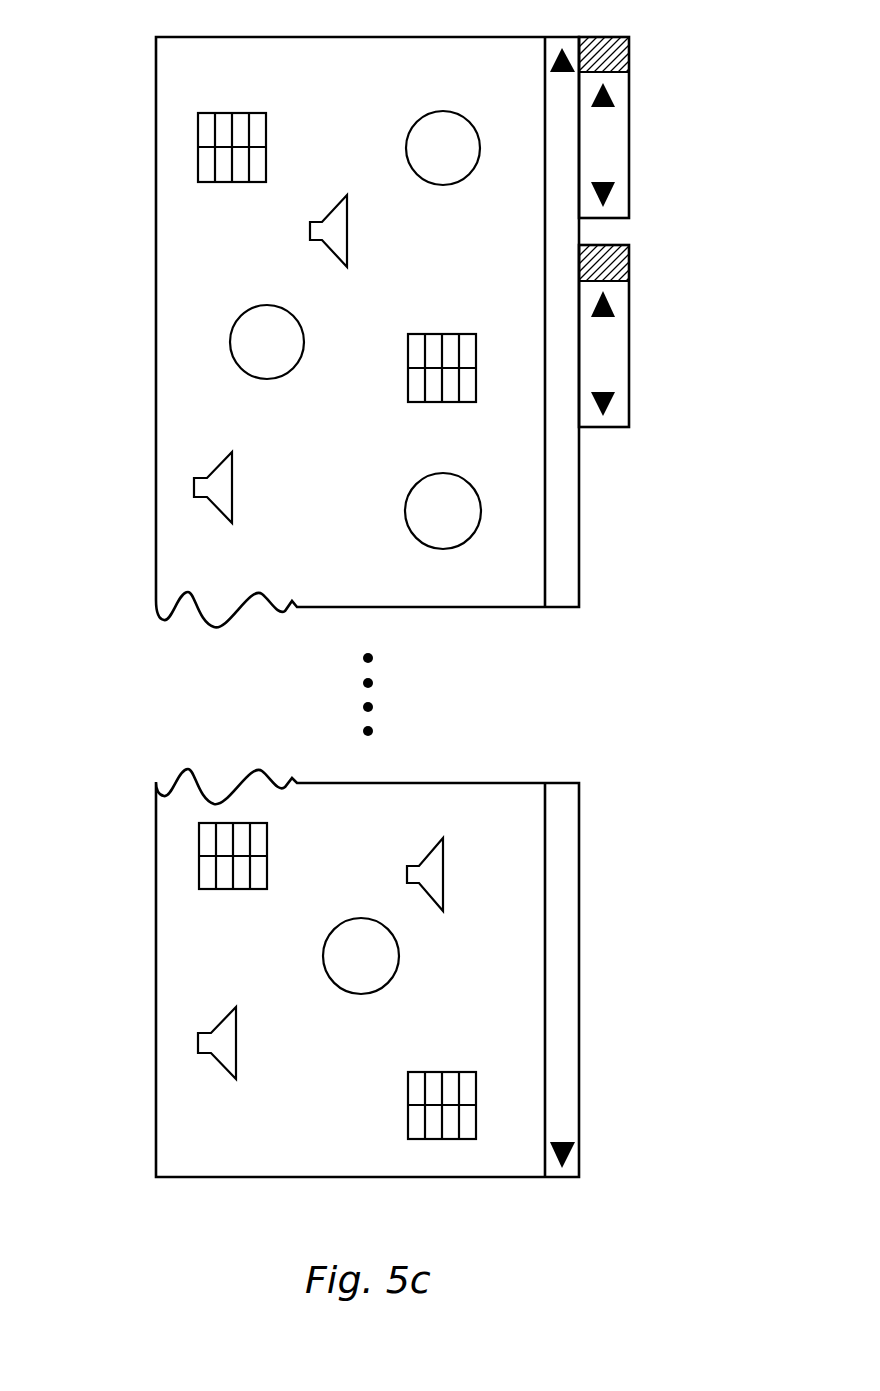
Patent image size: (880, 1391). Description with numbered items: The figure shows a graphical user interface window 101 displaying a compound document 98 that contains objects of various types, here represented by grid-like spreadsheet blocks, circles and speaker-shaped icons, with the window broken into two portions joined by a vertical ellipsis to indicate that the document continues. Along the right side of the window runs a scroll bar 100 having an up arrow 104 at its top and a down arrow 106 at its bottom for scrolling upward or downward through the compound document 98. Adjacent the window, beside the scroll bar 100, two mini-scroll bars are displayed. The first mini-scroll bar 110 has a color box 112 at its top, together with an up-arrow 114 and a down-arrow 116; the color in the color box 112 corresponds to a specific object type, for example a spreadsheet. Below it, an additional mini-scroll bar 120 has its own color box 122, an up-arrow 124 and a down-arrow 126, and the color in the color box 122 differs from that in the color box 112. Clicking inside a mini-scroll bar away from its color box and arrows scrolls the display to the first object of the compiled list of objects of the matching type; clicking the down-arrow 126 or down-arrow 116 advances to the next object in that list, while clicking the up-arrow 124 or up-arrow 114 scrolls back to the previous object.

The compound document 98 is at (390, 64).
The scroll bar 100 is at (562, 504).
The graphical user interface window 101 is at (114, 606).
The up arrow 104 is at (556, 56).
The down arrow 106 is at (570, 1152).
The mini-scroll bar 110 is at (660, 134).
The color box 112 is at (631, 52).
The up-arrow 114 is at (612, 96).
The down-arrow 116 is at (612, 196).
The mini-scroll bar 120 is at (660, 343).
The color box 122 is at (631, 262).
The up-arrow 124 is at (612, 303).
The down-arrow 126 is at (612, 403).